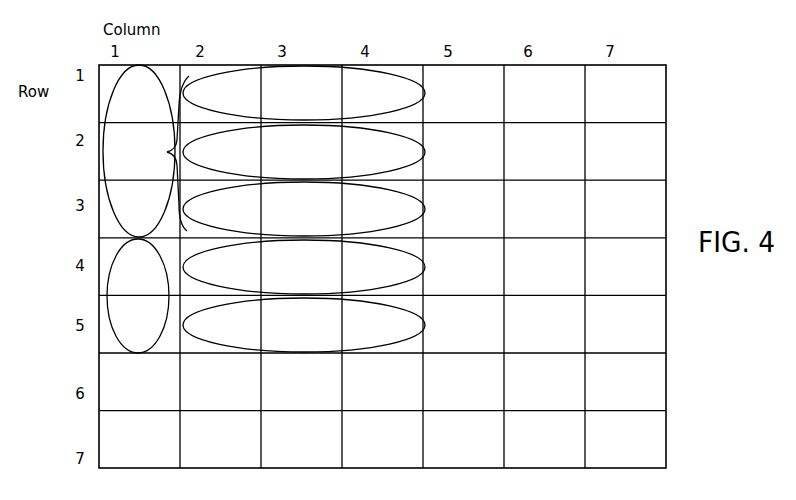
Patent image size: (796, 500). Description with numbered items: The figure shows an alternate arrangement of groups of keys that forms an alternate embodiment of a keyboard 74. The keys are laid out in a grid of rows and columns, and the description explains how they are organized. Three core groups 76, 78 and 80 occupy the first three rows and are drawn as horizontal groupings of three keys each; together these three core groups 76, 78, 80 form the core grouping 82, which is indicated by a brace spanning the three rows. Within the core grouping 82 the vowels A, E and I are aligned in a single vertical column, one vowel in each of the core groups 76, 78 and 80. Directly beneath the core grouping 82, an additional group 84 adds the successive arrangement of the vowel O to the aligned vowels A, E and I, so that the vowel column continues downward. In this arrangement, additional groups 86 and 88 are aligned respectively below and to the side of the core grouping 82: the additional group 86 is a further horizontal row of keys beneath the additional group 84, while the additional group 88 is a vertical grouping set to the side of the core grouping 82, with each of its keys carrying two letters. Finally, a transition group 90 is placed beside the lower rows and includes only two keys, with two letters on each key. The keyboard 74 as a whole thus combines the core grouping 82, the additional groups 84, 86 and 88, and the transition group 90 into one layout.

The keyboard 74 is at (668, 155).
The core group 76 is at (408, 95).
The core group 78 is at (410, 154).
The core group 80 is at (410, 210).
The core grouping 82 is at (184, 88).
The additional group 84 is at (410, 268).
The additional group 86 is at (408, 325).
The additional group 88 is at (125, 85).
The transition group 90 is at (113, 307).